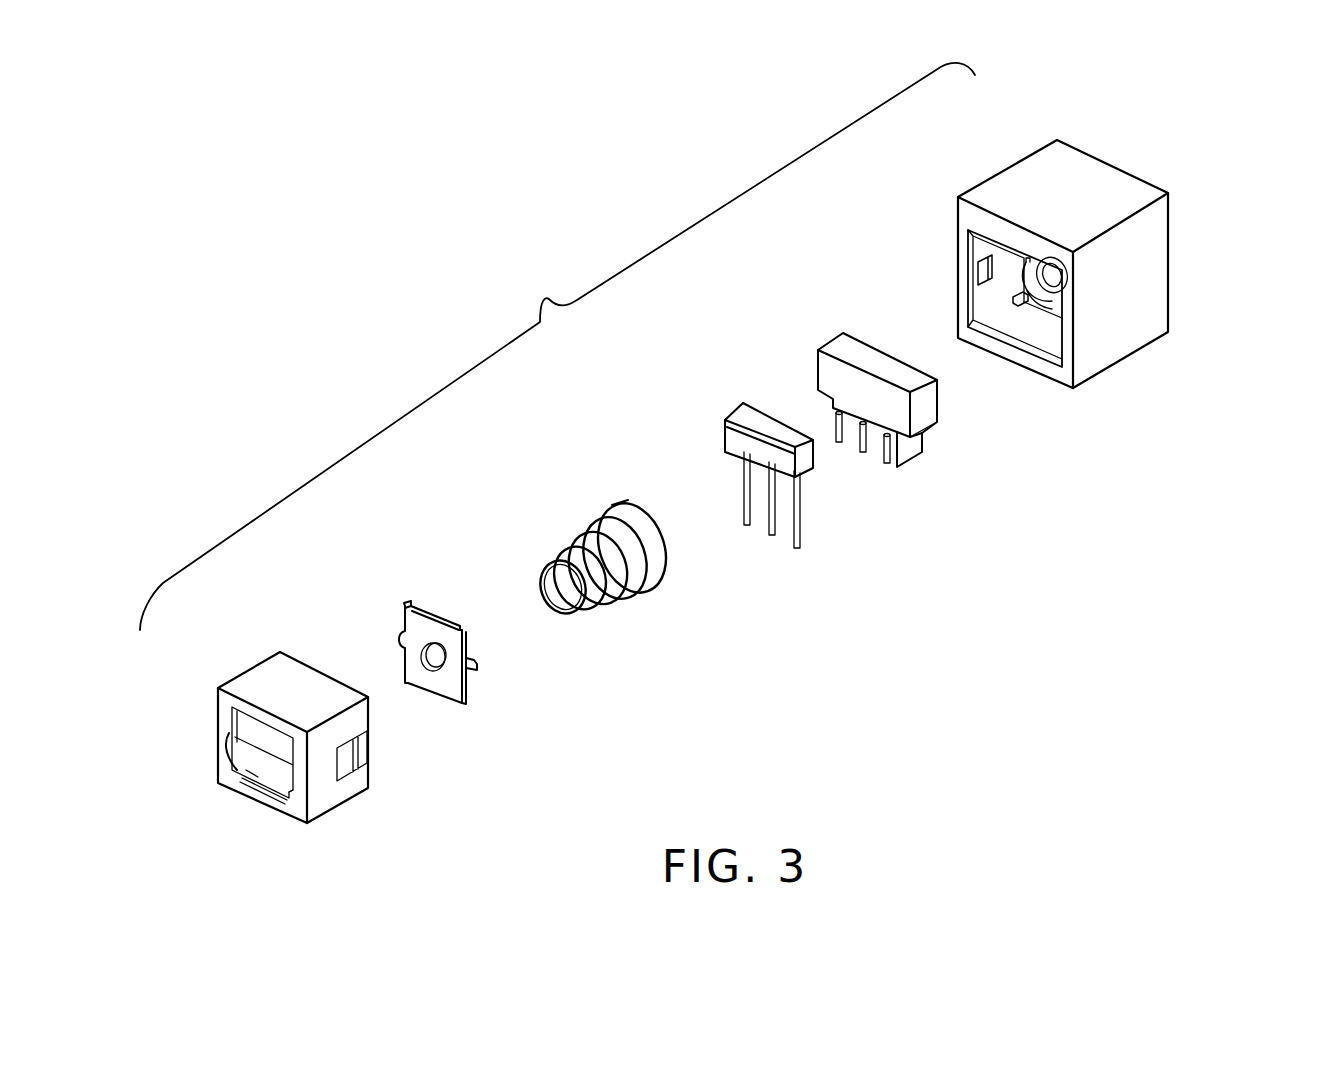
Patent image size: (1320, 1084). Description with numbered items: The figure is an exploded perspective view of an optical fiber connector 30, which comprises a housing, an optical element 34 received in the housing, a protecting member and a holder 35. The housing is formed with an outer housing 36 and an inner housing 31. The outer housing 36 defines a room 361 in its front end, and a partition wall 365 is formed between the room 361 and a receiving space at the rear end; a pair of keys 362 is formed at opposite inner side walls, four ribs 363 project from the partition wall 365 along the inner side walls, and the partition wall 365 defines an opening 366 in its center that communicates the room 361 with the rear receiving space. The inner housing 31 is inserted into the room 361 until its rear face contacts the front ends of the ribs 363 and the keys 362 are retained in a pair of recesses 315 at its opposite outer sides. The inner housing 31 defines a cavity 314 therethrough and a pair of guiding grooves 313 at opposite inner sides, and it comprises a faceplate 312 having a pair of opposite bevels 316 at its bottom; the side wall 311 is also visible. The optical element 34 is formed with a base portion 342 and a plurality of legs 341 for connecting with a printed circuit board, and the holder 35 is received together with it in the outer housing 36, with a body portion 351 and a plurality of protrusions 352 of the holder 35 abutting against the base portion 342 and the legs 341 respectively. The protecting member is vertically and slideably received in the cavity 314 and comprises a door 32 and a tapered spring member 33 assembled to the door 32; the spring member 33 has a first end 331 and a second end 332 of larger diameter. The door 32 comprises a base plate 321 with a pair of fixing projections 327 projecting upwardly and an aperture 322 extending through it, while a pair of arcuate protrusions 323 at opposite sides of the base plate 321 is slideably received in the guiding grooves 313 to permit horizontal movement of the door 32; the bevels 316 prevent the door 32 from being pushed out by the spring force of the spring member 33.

The optical fiber connector 30 is at (557, 346).
The inner housing 31 is at (293, 757).
The side wall 311 is at (340, 800).
The faceplate 312 is at (287, 802).
The guiding grooves 313 is at (226, 742).
The cavity 314 is at (258, 777).
The recesses 315 is at (362, 765).
The bevels 316 is at (290, 792).
The door 32 is at (480, 656).
The base plate 321 is at (457, 707).
The aperture 322 is at (433, 665).
The arcuate protrusions 323 is at (480, 660).
The fixing projections 327 is at (465, 630).
The spring member 33 is at (562, 529).
The first end 331 is at (545, 568).
The second end 332 is at (628, 500).
The optical element 34 is at (739, 510).
The legs 341 is at (800, 540).
The base portion 342 is at (760, 448).
The holder 35 is at (863, 421).
The body portion 351 is at (926, 408).
The protrusions 352 is at (888, 478).
The outer housing 36 is at (1049, 280).
The room 361 is at (1052, 346).
The keys 362 is at (982, 272).
The ribs 363 is at (1013, 299).
The partition wall 365 is at (1038, 293).
The opening 366 is at (1060, 282).